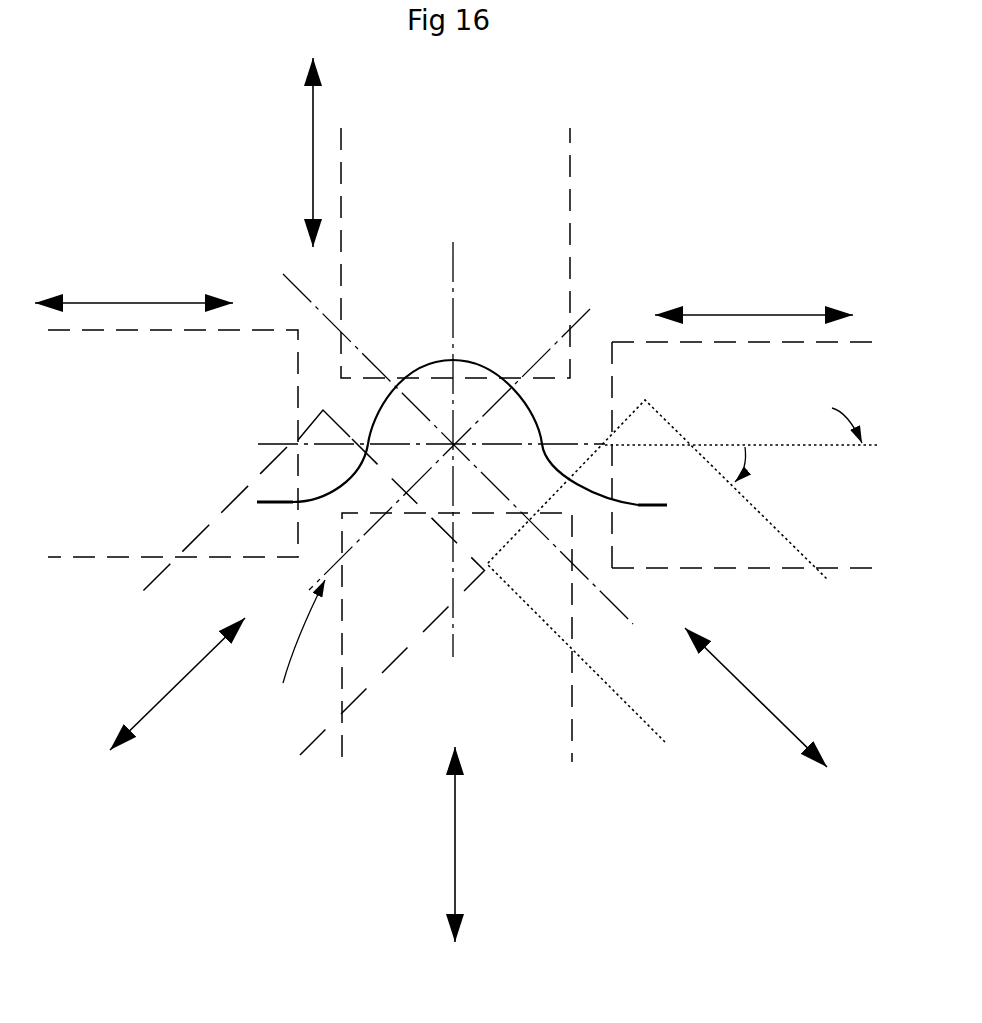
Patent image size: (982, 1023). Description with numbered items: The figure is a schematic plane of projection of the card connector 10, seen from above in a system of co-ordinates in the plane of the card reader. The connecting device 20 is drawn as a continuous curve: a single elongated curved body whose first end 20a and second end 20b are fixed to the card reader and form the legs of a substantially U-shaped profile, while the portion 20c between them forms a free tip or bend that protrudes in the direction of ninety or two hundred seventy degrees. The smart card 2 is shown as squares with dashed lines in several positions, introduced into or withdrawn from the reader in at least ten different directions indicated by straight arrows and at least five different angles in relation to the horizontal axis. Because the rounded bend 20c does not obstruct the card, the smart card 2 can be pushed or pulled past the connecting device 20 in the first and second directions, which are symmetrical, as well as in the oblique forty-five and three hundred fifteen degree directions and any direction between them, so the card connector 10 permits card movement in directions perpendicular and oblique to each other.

The card connector 10 is at (640, 227).
The connecting device 20 is at (504, 445).
The first end 20a is at (268, 507).
The second end 20b is at (648, 508).
The bend 20c is at (442, 347).
The smart card 2 is at (140, 332).